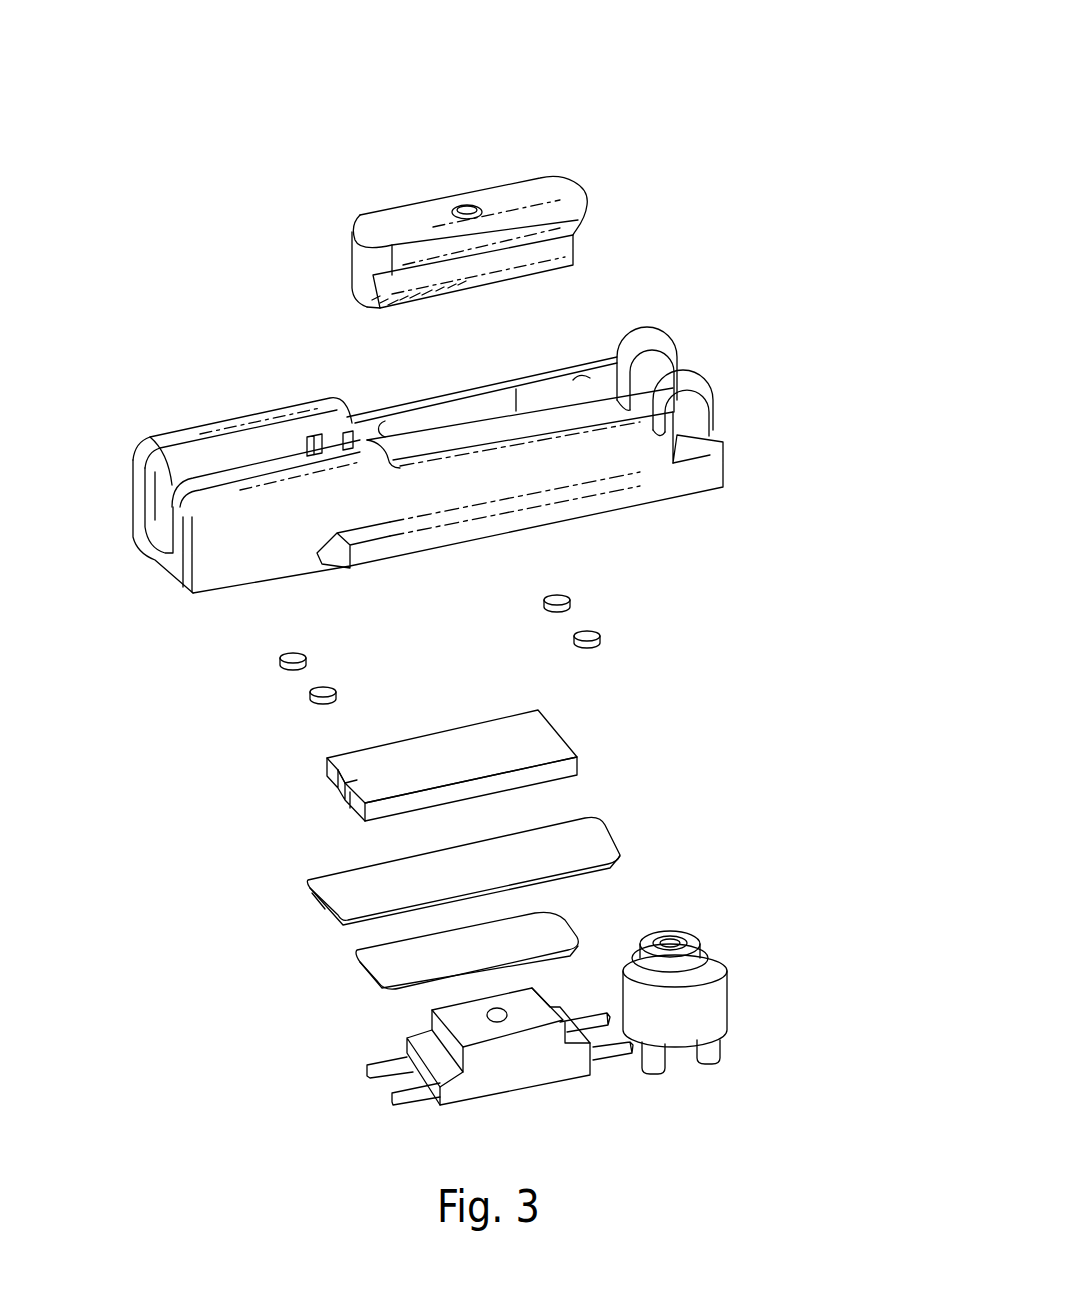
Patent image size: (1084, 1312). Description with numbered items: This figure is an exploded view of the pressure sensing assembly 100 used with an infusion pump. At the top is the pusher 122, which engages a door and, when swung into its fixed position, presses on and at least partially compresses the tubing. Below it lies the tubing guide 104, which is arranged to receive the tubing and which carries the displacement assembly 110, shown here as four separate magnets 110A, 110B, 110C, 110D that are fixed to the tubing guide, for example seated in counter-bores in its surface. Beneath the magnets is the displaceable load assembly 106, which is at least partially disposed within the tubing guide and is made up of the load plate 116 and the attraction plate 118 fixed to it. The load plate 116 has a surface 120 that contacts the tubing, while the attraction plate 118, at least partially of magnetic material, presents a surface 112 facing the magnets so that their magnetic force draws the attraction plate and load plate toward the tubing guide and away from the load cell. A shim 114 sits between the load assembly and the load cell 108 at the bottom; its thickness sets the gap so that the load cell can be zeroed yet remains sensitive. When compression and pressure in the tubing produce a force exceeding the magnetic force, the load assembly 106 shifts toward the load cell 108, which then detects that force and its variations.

The pressure sensing assembly 100 is at (718, 89).
The tubing guide 104 is at (585, 358).
The displaceable load assembly 106 is at (762, 857).
The load cell 108 is at (632, 1090).
The displacement assembly 110 is at (640, 600).
The magnet 110A is at (308, 702).
The magnet 110B is at (280, 661).
The magnet 110C is at (573, 643).
The magnet 110D is at (542, 608).
The surface 112 is at (582, 837).
The shim 114 is at (372, 978).
The load plate 116 is at (345, 797).
The attraction plate 118 is at (319, 905).
The surface 120 is at (397, 763).
The pusher 122 is at (417, 213).